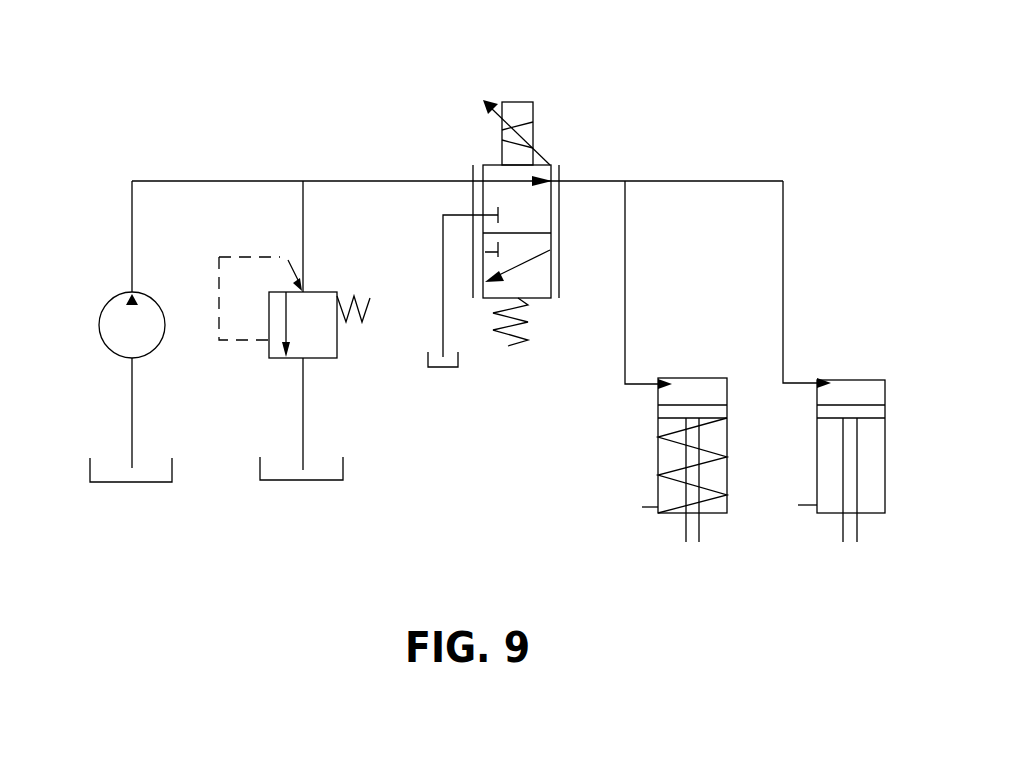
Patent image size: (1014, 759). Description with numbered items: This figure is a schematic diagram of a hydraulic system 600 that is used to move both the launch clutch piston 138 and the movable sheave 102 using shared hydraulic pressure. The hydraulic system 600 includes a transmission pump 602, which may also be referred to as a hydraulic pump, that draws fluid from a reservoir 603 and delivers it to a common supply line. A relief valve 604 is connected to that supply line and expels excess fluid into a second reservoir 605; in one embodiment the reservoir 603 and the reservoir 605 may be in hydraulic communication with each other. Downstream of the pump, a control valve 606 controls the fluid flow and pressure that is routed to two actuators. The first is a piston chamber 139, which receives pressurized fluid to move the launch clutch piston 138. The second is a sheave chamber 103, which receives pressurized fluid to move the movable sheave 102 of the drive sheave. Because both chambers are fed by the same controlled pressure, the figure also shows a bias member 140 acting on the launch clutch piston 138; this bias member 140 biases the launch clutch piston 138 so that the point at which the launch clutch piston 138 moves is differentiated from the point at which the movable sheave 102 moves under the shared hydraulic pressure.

The hydraulic system 600 is at (808, 64).
The transmission pump 602 is at (100, 315).
The reservoir 603 is at (150, 483).
The relief valve 604 is at (338, 345).
The reservoir 605 is at (317, 481).
The control valve 606 is at (492, 160).
The launch clutch piston 138 is at (663, 413).
The piston chamber 139 is at (687, 392).
The bias member 140 is at (710, 463).
The movable sheave 102 is at (886, 475).
The sheave chamber 103 is at (858, 392).